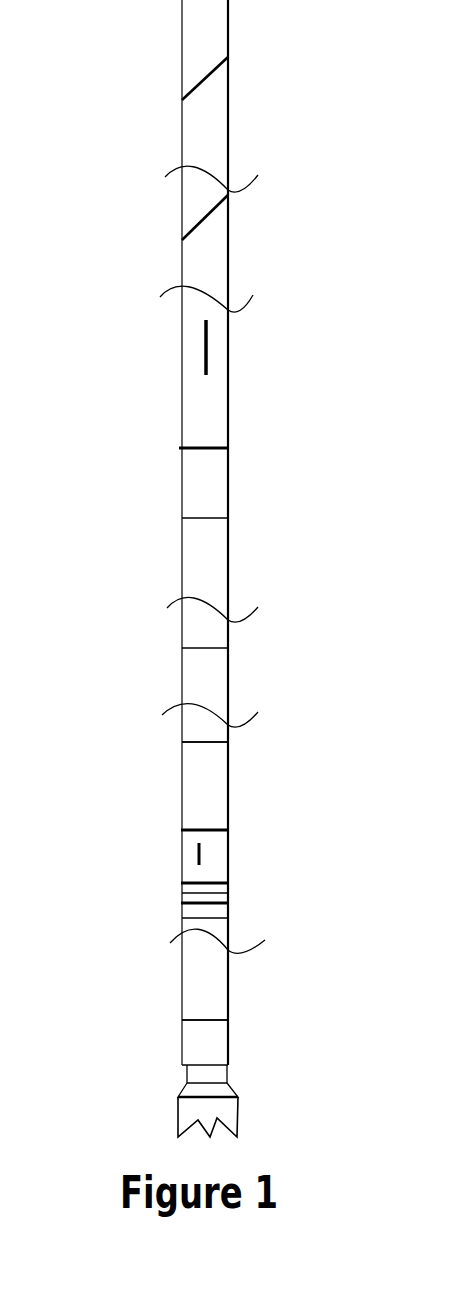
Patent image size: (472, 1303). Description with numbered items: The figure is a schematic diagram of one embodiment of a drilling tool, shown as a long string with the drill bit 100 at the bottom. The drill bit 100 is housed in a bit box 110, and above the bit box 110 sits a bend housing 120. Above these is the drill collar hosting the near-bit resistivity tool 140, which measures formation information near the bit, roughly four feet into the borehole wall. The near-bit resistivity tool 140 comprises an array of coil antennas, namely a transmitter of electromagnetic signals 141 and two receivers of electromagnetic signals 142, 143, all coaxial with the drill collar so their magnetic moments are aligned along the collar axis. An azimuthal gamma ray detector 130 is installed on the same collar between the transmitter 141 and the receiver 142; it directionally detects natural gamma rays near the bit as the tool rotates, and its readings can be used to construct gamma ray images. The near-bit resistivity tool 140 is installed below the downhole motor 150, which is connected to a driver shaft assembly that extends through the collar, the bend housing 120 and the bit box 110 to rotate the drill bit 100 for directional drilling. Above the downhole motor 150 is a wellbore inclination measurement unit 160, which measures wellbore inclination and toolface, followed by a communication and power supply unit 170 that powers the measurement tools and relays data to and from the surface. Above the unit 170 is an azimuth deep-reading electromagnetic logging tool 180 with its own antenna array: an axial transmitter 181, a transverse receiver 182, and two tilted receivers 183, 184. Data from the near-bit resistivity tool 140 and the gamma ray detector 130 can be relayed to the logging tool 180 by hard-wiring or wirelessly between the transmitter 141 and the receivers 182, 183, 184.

The drill bit 100 is at (166, 1110).
The bit box 110 is at (190, 1038).
The bend housing 120 is at (197, 980).
The azimuthal gamma ray detector 130 is at (206, 853).
The near-bit resistivity tool 140 is at (190, 880).
The transmitter of electromagnetic signals 141 is at (233, 826).
The receiver of electromagnetic signals 142 is at (233, 887).
The receiver of electromagnetic signals 143 is at (232, 906).
The downhole motor 150 is at (207, 804).
The wellbore inclination measurement unit 160 is at (197, 675).
The communication and power supply unit 170 is at (197, 568).
The azimuth deep-reading electromagnetic logging tool 180 is at (196, 393).
The axial transmitter 181 is at (222, 440).
The transverse receiver 182 is at (215, 345).
The tilted receiver 183 is at (222, 218).
The tilted receiver 184 is at (215, 78).